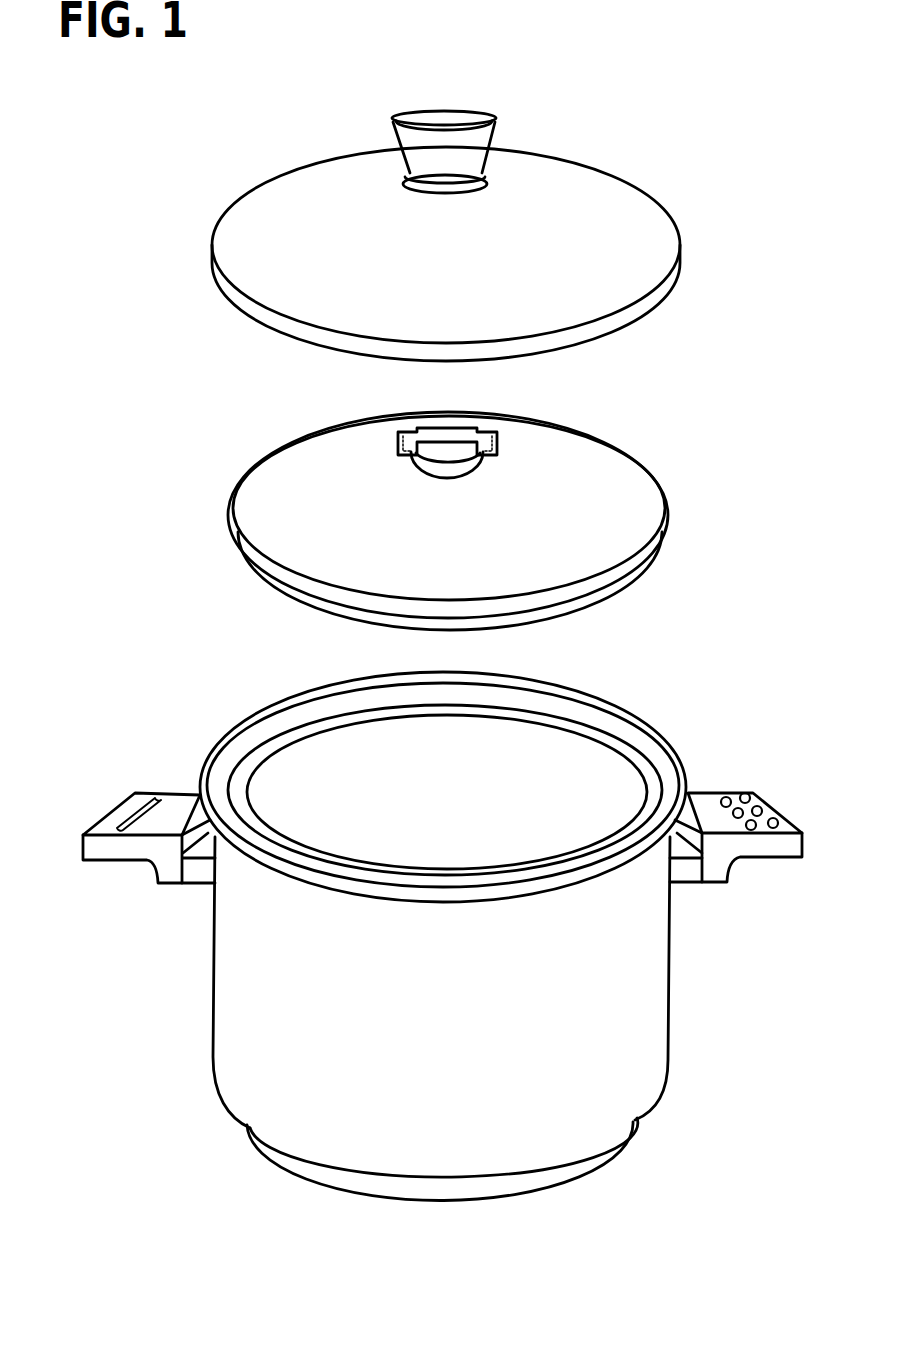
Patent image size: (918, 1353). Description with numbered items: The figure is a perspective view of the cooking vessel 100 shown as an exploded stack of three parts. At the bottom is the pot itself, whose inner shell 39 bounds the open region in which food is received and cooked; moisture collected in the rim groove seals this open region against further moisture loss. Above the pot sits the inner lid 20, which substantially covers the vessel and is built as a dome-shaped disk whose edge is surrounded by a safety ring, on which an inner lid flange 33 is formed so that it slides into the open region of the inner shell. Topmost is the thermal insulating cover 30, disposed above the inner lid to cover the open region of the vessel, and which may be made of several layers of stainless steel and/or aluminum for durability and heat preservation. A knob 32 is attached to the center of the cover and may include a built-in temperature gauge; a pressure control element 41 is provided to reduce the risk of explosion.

The cooking vessel 100 is at (442, 970).
The inner shell 39 is at (443, 787).
The inner lid 20 is at (602, 510).
The inner lid flange 33 is at (590, 597).
The thermal insulating cover 30 is at (650, 300).
The knob 32 is at (509, 114).
The pressure control element 41 is at (455, 118).